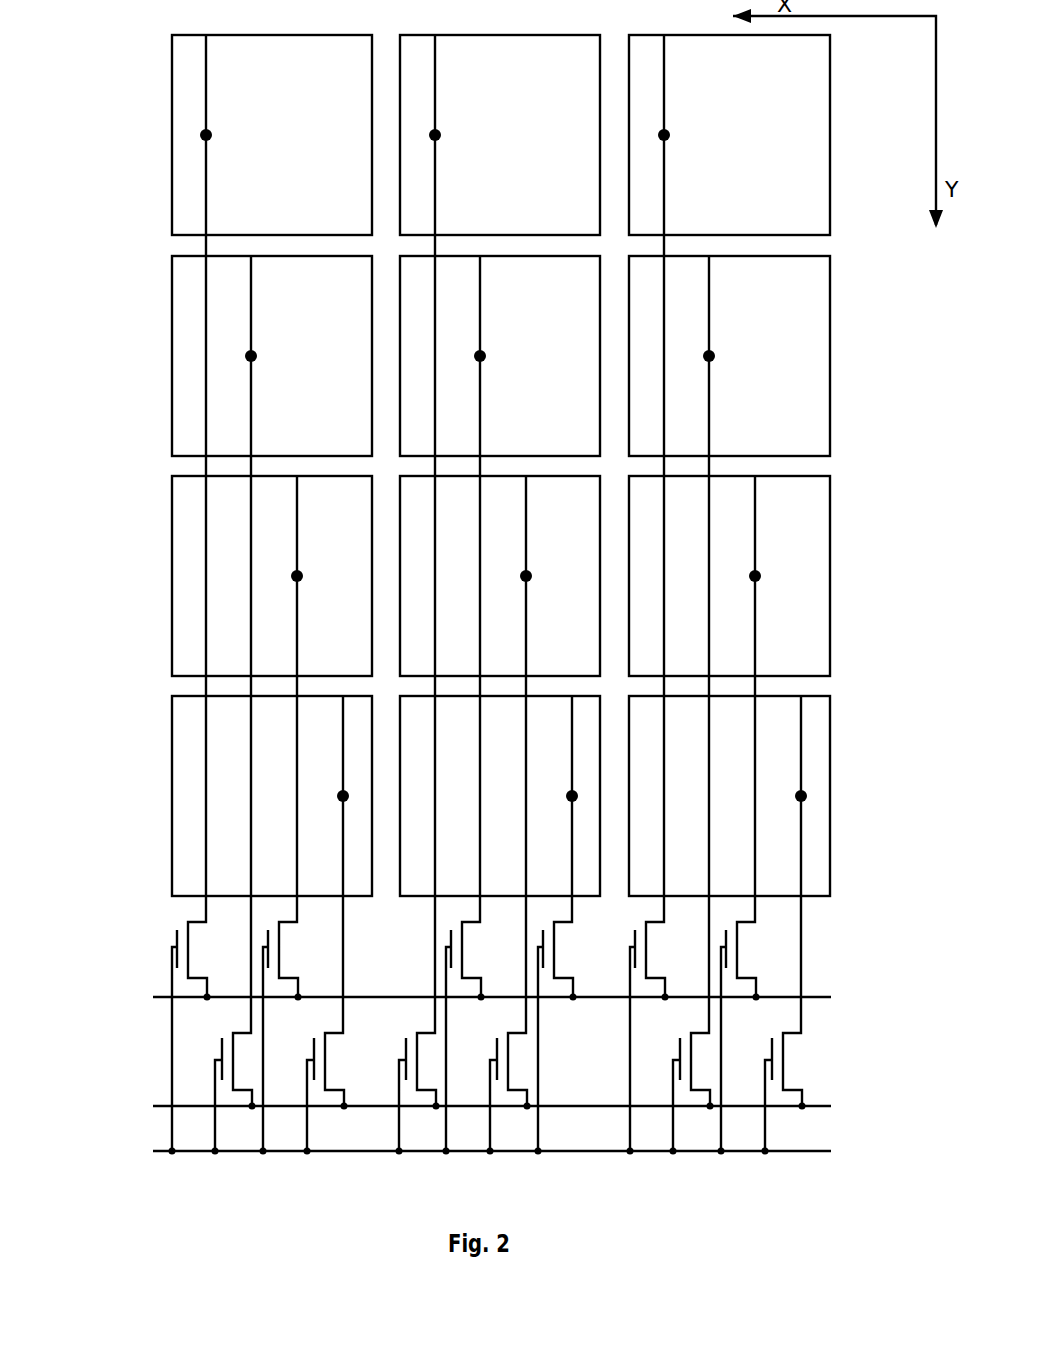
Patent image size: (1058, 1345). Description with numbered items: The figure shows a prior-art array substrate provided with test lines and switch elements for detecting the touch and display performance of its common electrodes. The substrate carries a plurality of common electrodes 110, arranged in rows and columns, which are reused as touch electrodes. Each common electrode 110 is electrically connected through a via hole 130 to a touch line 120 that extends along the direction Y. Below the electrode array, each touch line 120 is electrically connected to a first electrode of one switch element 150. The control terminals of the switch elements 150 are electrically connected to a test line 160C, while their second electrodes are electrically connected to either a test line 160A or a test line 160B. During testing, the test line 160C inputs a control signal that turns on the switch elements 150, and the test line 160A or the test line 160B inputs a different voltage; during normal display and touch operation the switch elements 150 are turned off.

The common electrode 110 is at (790, 91).
The touch line 120 is at (663, 58).
The via hole 130 is at (667, 137).
The switch element 150 is at (176, 930).
The test line 160A is at (818, 997).
The test line 160B is at (818, 1106).
The test line 160C is at (818, 1151).